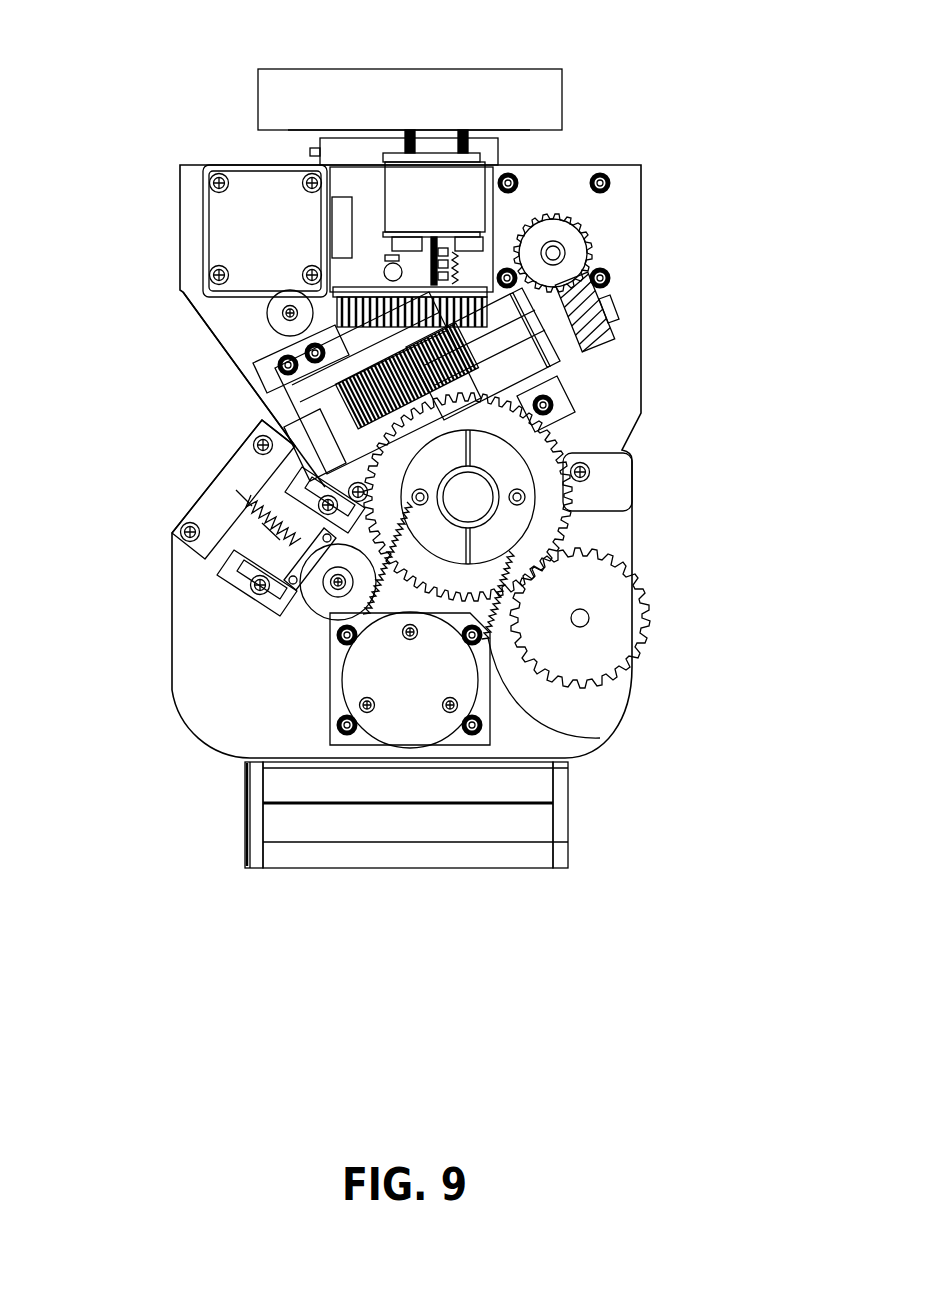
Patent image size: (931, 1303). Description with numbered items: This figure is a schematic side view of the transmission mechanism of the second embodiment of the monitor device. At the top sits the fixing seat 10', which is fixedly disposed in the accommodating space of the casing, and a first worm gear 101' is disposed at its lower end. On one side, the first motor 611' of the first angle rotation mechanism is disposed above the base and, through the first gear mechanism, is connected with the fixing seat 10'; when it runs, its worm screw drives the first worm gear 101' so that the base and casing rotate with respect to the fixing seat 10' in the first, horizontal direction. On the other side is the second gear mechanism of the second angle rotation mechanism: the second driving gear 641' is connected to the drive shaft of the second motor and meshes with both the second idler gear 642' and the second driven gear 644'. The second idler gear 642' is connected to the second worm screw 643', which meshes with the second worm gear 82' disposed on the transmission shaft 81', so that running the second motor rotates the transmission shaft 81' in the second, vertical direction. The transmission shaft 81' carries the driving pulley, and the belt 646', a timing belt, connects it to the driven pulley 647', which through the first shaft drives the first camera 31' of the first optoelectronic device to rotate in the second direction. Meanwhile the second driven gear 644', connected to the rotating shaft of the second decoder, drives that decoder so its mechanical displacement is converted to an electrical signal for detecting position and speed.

The fixing seat 10' is at (410, 78).
The first motor 611' is at (210, 231).
The first worm gear 101' is at (300, 386).
The second driving gear 641' is at (650, 253).
The second idler gear 642' is at (670, 312).
The second worm screw 643' is at (596, 360).
The second driven gear 644' is at (575, 468).
The transmission shaft 81' is at (587, 467).
The second worm gear 82' is at (629, 618).
The driven pulley 647' is at (290, 680).
The belt 646' is at (605, 690).
The first camera 31' is at (371, 856).